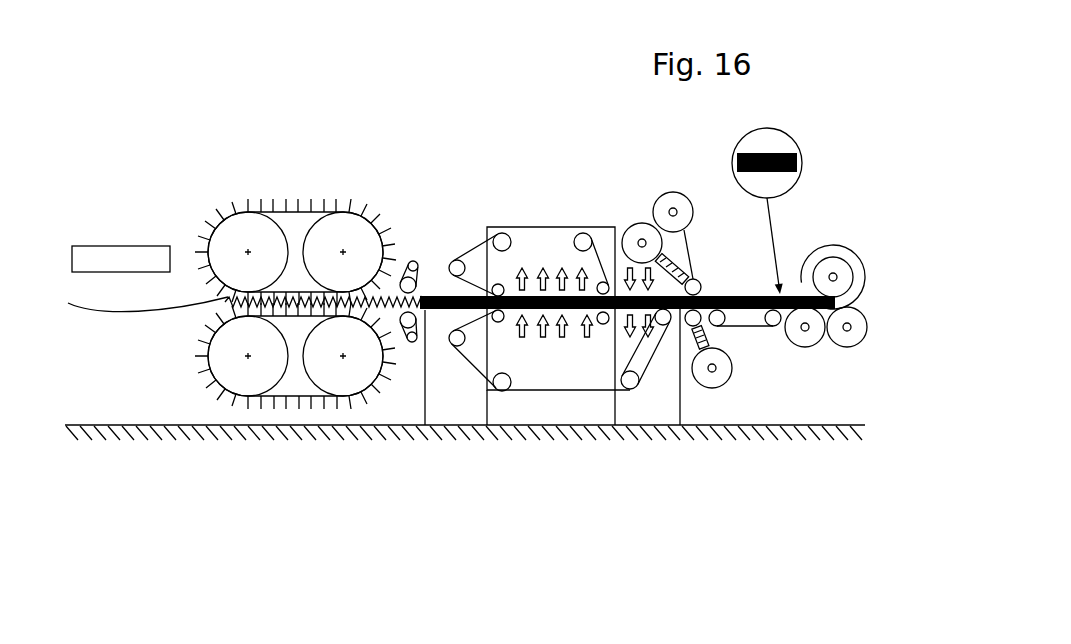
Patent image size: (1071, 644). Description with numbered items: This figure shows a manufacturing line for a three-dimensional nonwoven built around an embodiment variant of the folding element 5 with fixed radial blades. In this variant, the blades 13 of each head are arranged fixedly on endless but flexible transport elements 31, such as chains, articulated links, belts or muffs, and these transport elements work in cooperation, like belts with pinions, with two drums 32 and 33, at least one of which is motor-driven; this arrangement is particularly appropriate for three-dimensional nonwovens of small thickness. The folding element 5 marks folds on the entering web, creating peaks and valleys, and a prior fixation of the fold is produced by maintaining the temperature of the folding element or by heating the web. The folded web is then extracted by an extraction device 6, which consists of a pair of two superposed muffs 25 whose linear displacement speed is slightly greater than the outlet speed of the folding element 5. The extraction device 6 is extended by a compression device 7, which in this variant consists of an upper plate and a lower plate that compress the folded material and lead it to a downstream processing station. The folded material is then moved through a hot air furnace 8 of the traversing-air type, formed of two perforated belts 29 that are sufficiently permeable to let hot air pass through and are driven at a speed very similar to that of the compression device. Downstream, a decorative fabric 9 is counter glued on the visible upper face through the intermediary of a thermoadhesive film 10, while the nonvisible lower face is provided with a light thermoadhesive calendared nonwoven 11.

The folding element 5 is at (259, 218).
The extraction device 6 is at (412, 260).
The compression device 7 is at (442, 291).
The hot air furnace 8 is at (564, 299).
The decorative fabric 9 is at (676, 200).
The thermoadhesive film 10 is at (641, 223).
The light thermoadhesive calendared nonwoven 11 is at (712, 368).
The fixed radial blades 13 is at (218, 213).
The muffs 25 is at (425, 425).
The belts 29 is at (526, 227).
The transport elements 31 is at (307, 212).
The drum 32 is at (232, 213).
The drum 33 is at (360, 232).